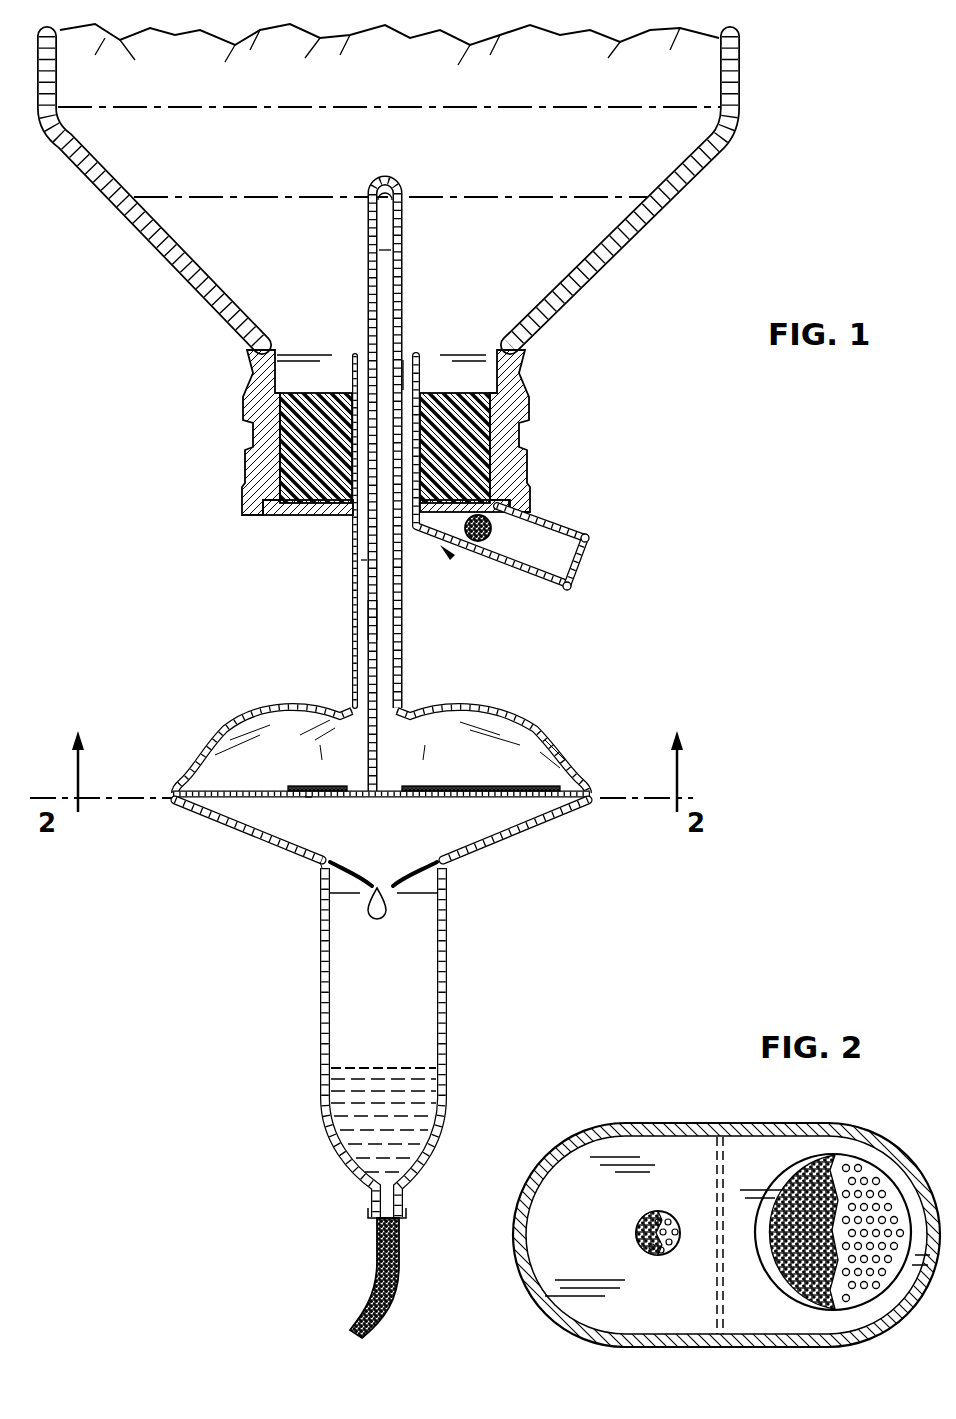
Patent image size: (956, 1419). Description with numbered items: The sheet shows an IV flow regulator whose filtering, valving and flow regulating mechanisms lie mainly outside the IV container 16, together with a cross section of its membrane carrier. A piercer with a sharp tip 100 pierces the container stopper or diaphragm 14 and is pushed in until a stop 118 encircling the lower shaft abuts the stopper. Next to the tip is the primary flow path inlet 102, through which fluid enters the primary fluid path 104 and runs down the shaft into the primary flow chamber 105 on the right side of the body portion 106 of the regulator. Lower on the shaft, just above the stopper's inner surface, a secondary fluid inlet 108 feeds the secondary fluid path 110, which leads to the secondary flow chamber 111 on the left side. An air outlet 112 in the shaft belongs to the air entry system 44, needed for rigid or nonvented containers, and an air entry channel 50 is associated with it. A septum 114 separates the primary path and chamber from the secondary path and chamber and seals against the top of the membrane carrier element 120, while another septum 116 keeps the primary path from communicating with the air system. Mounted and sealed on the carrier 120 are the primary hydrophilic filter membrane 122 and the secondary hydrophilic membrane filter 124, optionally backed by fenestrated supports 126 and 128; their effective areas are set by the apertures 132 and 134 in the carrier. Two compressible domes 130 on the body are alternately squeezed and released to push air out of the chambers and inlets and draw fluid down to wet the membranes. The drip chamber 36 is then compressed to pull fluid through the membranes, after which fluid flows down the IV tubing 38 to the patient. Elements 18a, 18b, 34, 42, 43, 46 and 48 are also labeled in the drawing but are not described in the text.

In FIG. 1, the stopper 14 is at (292, 432).
In FIG. 1, the IV container 16 is at (743, 72).
In FIG. 1, the upper material level 18a is at (598, 107).
In FIG. 1, the lower material level 18b is at (573, 197).
In FIG. 1, the bottle neck rim 34 is at (437, 884).
In FIG. 1, the drip chamber 36 is at (320, 977).
In FIG. 1, the IV tubing 38 is at (378, 1272).
In FIG. 1, the drop 42 is at (380, 912).
In FIG. 1, the liquid 43 is at (340, 1068).
In FIG. 1, the air entry system 44 is at (574, 519).
In FIG. 1, the side port outlet 46 is at (588, 563).
In FIG. 1, the ball valve 48 is at (478, 542).
In FIG. 1, the air entry channel 50 is at (418, 437).
In FIG. 1, the sharp tip 100 is at (387, 178).
In FIG. 1, the primary flow path inlet 102 is at (389, 193).
In FIG. 1, the primary fluid path 104 is at (388, 250).
In FIG. 1, the primary flow chamber 105 is at (425, 745).
In FIG. 1, the body portion of the flow regulator 106 is at (626, 860).
In FIG. 1, the secondary fluid inlet 108 is at (353, 352).
In FIG. 1, the secondary fluid path 110 is at (365, 557).
In FIG. 1, the secondary flow chamber 111 is at (320, 745).
In FIG. 1, the air outlet 112 is at (415, 352).
In FIG. 1, the septum 114 is at (370, 592).
In FIG. 2, the septum 114 is at (715, 1287).
In FIG. 1, the septum 116 is at (400, 375).
In FIG. 1, the stop 118 is at (262, 508).
In FIG. 1, the membrane carrier element 120 is at (240, 803).
In FIG. 2, the membrane carrier element 120 is at (760, 1155).
In FIG. 1, the primary flow regulator and hydrophilic filter membrane 122 is at (470, 772).
In FIG. 2, the primary flow regulator and hydrophilic filter membrane 122 is at (790, 1252).
In FIG. 1, the secondary flow regulator and hydrophilic membrane filter 124 is at (312, 785).
In FIG. 2, the secondary flow regulator and hydrophilic membrane filter 124 is at (642, 1222).
In FIG. 1, the fenestrated membrane support 126 is at (500, 803).
In FIG. 2, the fenestrated membrane support 126 is at (868, 1175).
In FIG. 1, the fenestrated membrane support 128 is at (308, 800).
In FIG. 2, the fenestrated membrane support 128 is at (672, 1222).
In FIG. 1, the compressible domes 130 is at (232, 720).
In FIG. 2, the aperture 132 is at (820, 1163).
In FIG. 2, the aperture 134 is at (637, 1240).